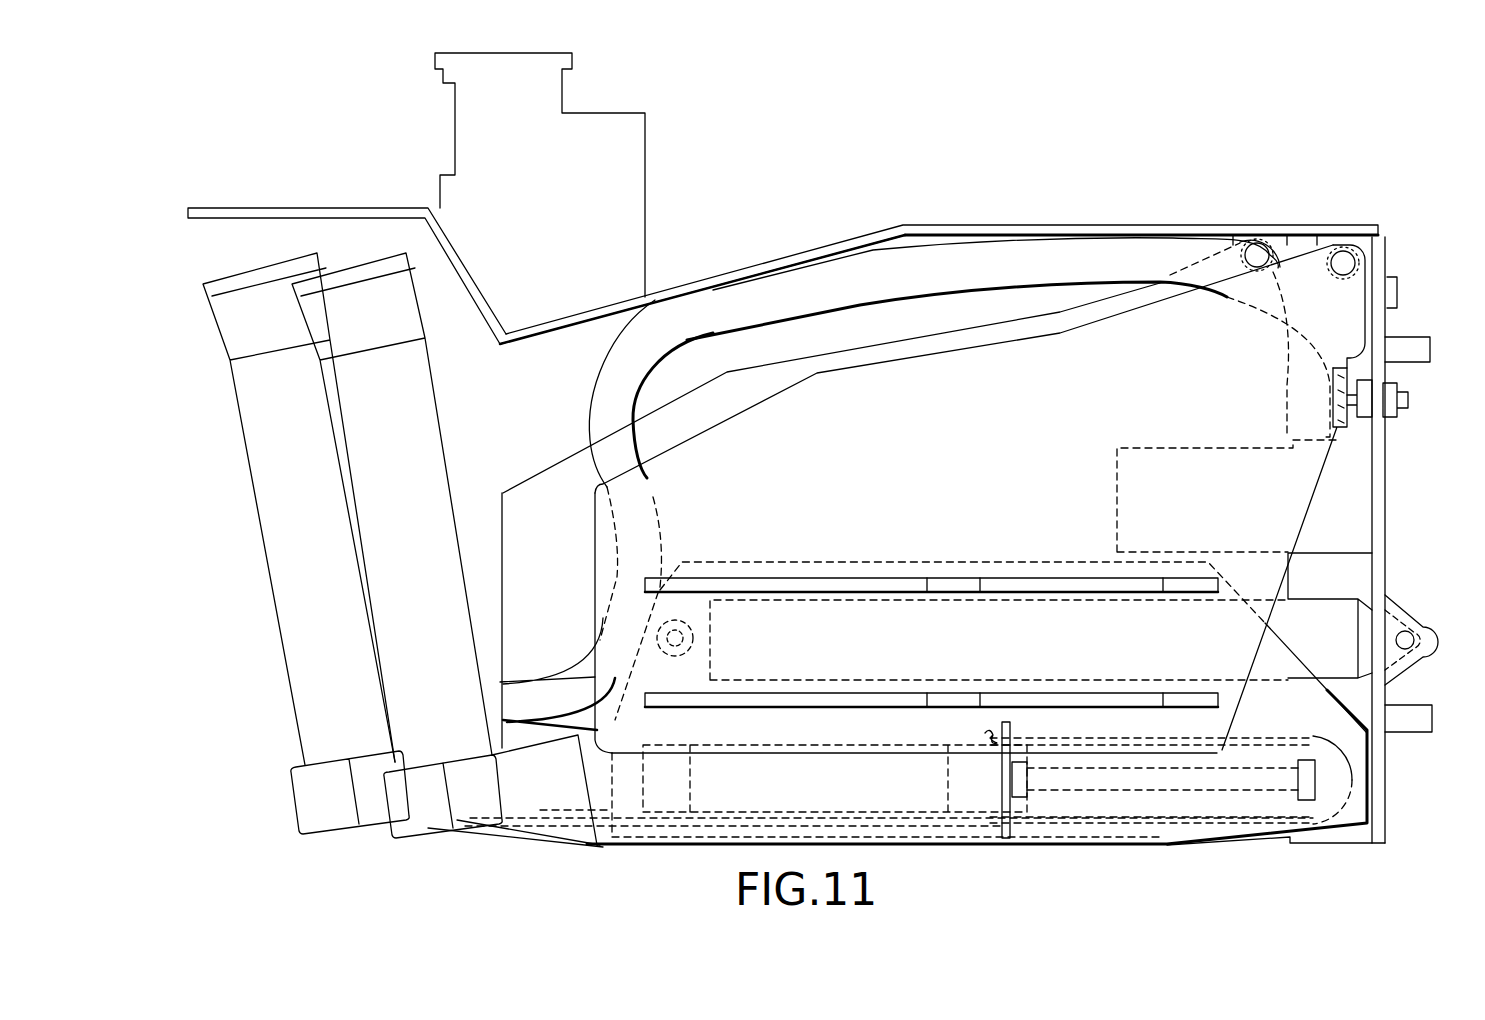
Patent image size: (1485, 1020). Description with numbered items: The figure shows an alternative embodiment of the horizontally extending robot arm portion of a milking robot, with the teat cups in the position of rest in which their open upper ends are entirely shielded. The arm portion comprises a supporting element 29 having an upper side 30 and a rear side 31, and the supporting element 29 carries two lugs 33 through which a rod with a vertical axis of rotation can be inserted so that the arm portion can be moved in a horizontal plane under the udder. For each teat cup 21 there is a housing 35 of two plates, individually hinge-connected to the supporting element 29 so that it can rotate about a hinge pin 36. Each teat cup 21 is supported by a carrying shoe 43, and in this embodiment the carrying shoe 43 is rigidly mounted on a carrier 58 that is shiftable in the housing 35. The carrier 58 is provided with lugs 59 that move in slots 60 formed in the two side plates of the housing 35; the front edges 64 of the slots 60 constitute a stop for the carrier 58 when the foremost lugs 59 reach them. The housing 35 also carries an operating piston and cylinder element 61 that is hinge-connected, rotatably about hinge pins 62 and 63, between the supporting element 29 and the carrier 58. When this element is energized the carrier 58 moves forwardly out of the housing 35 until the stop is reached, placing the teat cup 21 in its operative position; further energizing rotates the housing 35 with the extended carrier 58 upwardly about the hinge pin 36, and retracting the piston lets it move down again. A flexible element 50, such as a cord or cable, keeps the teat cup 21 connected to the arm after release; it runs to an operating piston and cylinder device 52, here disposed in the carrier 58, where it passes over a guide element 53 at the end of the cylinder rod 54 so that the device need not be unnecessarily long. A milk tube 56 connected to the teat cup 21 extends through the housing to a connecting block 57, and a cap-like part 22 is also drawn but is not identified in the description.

The teat cup 21 is at (390, 415).
The mounting cap 22 is at (642, 149).
The supporting element 29 is at (1084, 218).
The upper side 30 is at (338, 207).
The rear side 31 is at (1386, 498).
The lugs 33 is at (1419, 338).
The housing 35 is at (565, 483).
The hinge pin 36 is at (1341, 260).
The carrying shoe 43 is at (325, 772).
The flexible element 50 is at (535, 820).
The operating piston and cylinder device 52 is at (833, 787).
The guide element 53 is at (1328, 745).
The cylinder rod 54 is at (1142, 775).
The milk tube 56 is at (975, 280).
The connecting block 57 is at (1183, 460).
The carrier 58 is at (787, 568).
The lugs 59 is at (952, 592).
The slots 60 is at (1073, 592).
The operating piston and cylinder element 61 is at (857, 613).
The hinge pin 62 is at (1410, 635).
The hinge pin 63 is at (693, 638).
The front edges 64 is at (643, 580).